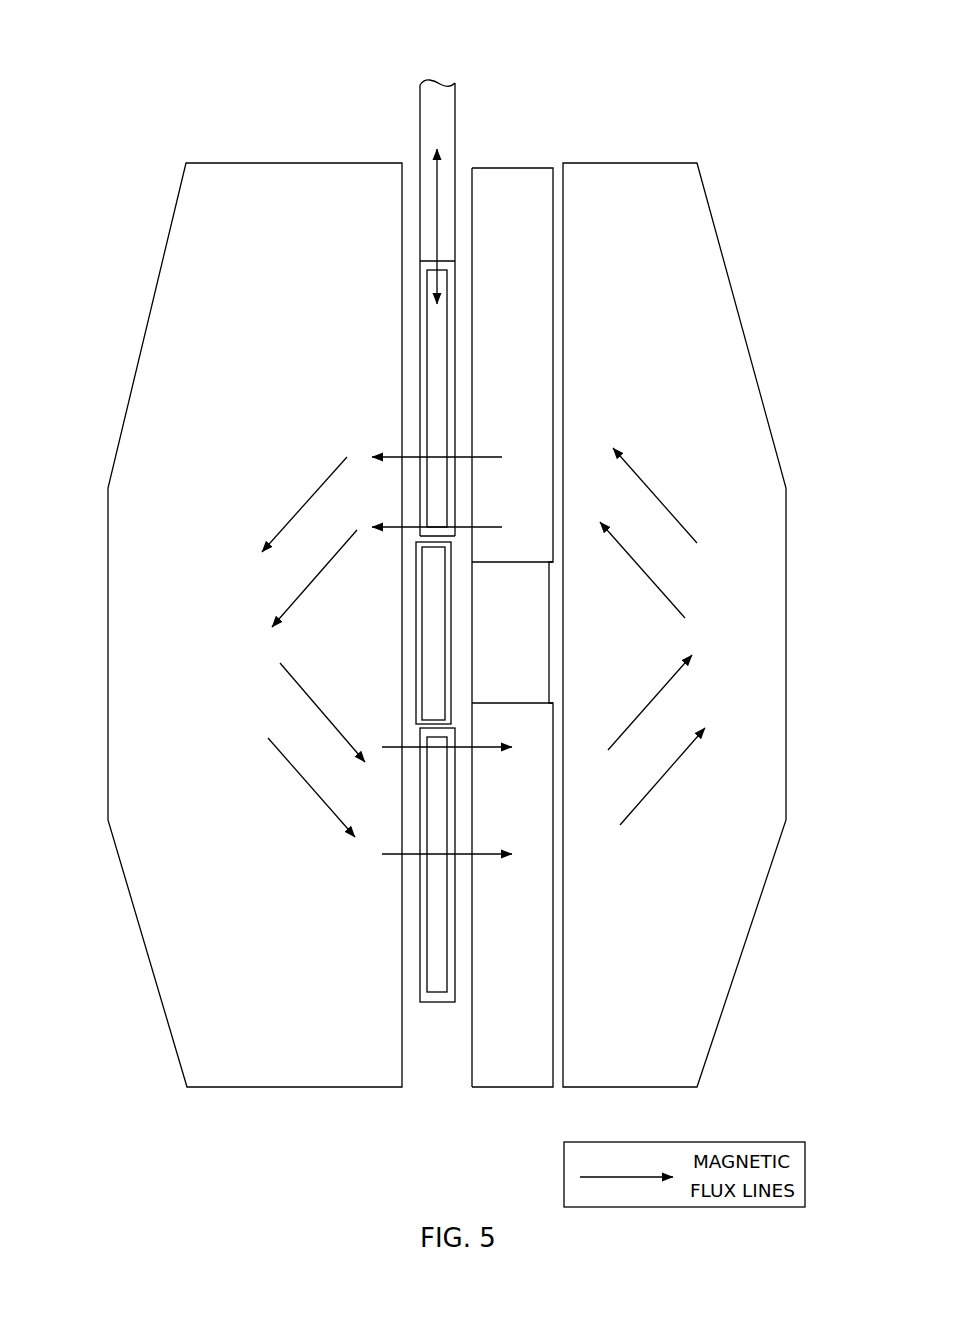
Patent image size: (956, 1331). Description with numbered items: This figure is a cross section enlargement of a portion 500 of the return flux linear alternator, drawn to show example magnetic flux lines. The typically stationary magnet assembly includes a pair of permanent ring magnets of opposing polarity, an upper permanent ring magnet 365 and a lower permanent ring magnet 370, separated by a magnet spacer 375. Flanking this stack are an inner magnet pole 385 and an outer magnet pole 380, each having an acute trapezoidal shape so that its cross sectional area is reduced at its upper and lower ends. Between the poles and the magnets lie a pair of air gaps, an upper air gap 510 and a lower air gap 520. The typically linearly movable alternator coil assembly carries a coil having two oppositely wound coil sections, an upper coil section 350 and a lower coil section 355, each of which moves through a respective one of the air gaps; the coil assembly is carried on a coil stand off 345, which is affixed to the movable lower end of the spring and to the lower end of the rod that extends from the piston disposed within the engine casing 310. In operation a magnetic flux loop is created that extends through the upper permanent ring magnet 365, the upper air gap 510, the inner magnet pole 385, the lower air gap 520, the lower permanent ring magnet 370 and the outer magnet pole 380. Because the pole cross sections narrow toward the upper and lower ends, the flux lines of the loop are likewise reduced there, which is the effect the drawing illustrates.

The portion of the return flux linear alternator 500 is at (580, 61).
The engine casing 310 is at (415, 648).
The coil stand off 345 is at (419, 122).
The upper coil section 350 is at (419, 408).
The lower coil section 355 is at (419, 946).
The upper permanent ring magnet 365 is at (538, 168).
The lower permanent ring magnet 370 is at (547, 1088).
The magnet spacer 375 is at (550, 638).
The outer magnet pole 380 is at (742, 325).
The inner magnet pole 385 is at (108, 797).
The upper air gap 510 is at (463, 186).
The lower air gap 520 is at (463, 993).